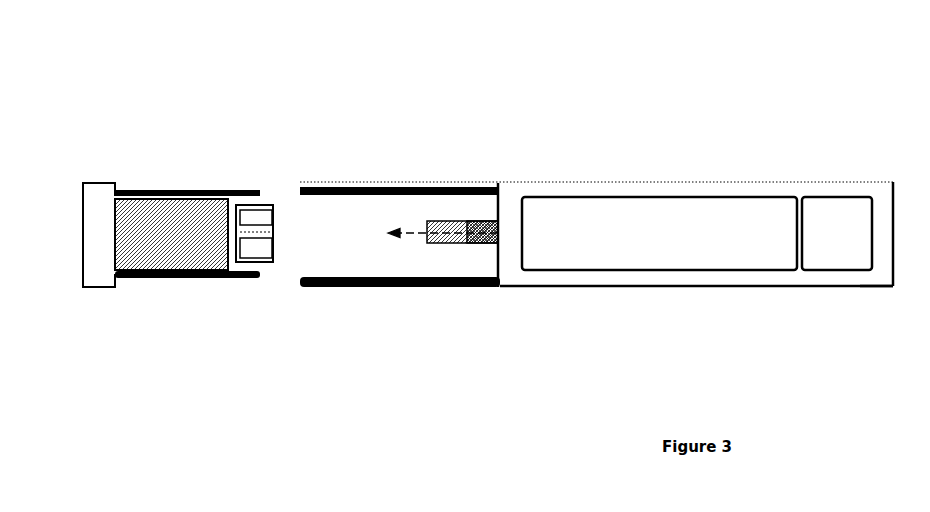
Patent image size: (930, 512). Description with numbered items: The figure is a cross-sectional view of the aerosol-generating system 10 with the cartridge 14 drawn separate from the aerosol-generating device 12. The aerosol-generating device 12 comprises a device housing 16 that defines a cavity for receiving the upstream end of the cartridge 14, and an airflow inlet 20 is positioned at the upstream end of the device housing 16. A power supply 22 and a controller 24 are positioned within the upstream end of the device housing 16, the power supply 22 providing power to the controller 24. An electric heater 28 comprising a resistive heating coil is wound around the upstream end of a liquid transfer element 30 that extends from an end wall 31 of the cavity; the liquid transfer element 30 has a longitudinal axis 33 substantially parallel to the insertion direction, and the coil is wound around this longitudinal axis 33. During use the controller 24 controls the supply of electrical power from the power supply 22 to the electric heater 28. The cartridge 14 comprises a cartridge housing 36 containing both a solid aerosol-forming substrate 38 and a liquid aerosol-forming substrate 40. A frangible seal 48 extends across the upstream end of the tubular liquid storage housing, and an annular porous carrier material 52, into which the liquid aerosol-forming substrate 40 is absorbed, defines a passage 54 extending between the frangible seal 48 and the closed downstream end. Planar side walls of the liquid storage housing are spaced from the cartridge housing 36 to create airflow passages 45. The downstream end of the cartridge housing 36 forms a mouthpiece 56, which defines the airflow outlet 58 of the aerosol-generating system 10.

The aerosol-generating system 10 is at (746, 142).
The aerosol-generating device 12 is at (610, 170).
The cartridge 14 is at (150, 175).
The device housing 16 is at (463, 187).
The airflow inlet 20 is at (880, 285).
The power supply 22 is at (659, 233).
The controller 24 is at (837, 233).
The electric heater 28 is at (477, 243).
The liquid transfer element 30 is at (457, 223).
The end wall 31 is at (500, 192).
The longitudinal axis 33 is at (415, 233).
The cartridge housing 36 is at (205, 192).
The solid aerosol-forming substrate 38 is at (160, 247).
The liquid aerosol-forming substrate 40 is at (268, 197).
The airflow passages 45 is at (250, 267).
The frangible seal 48 is at (275, 232).
The porous carrier material 52 is at (252, 216).
The passage 54 is at (243, 233).
The mouthpiece 56 is at (95, 287).
The airflow outlet 58 is at (92, 232).